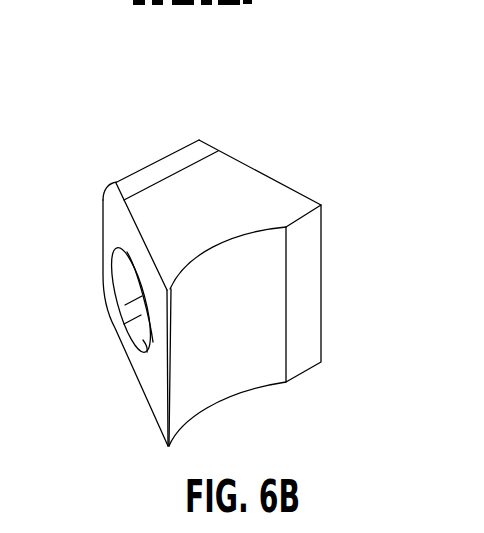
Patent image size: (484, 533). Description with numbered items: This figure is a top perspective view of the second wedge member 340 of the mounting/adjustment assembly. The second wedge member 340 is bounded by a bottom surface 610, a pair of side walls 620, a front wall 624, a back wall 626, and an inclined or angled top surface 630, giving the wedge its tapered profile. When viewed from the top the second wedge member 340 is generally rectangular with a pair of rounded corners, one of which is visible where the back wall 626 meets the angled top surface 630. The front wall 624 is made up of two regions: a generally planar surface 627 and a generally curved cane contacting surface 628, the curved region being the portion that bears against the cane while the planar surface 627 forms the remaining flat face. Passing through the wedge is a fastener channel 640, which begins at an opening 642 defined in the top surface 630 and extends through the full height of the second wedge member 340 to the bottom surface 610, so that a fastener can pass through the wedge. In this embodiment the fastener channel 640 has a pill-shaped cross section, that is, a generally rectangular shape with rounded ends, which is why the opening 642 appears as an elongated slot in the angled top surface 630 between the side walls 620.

The second wedge member 340 is at (257, 84).
The bottom surface 610 is at (292, 189).
The side walls 620 is at (203, 192).
The front wall 624 is at (243, 362).
The back wall 626 is at (117, 182).
The planar surface 627 is at (312, 323).
The cane contacting surface 628 is at (207, 365).
The top surface 630 is at (113, 222).
The fastener channel 640 is at (100, 287).
The opening 642 is at (132, 325).